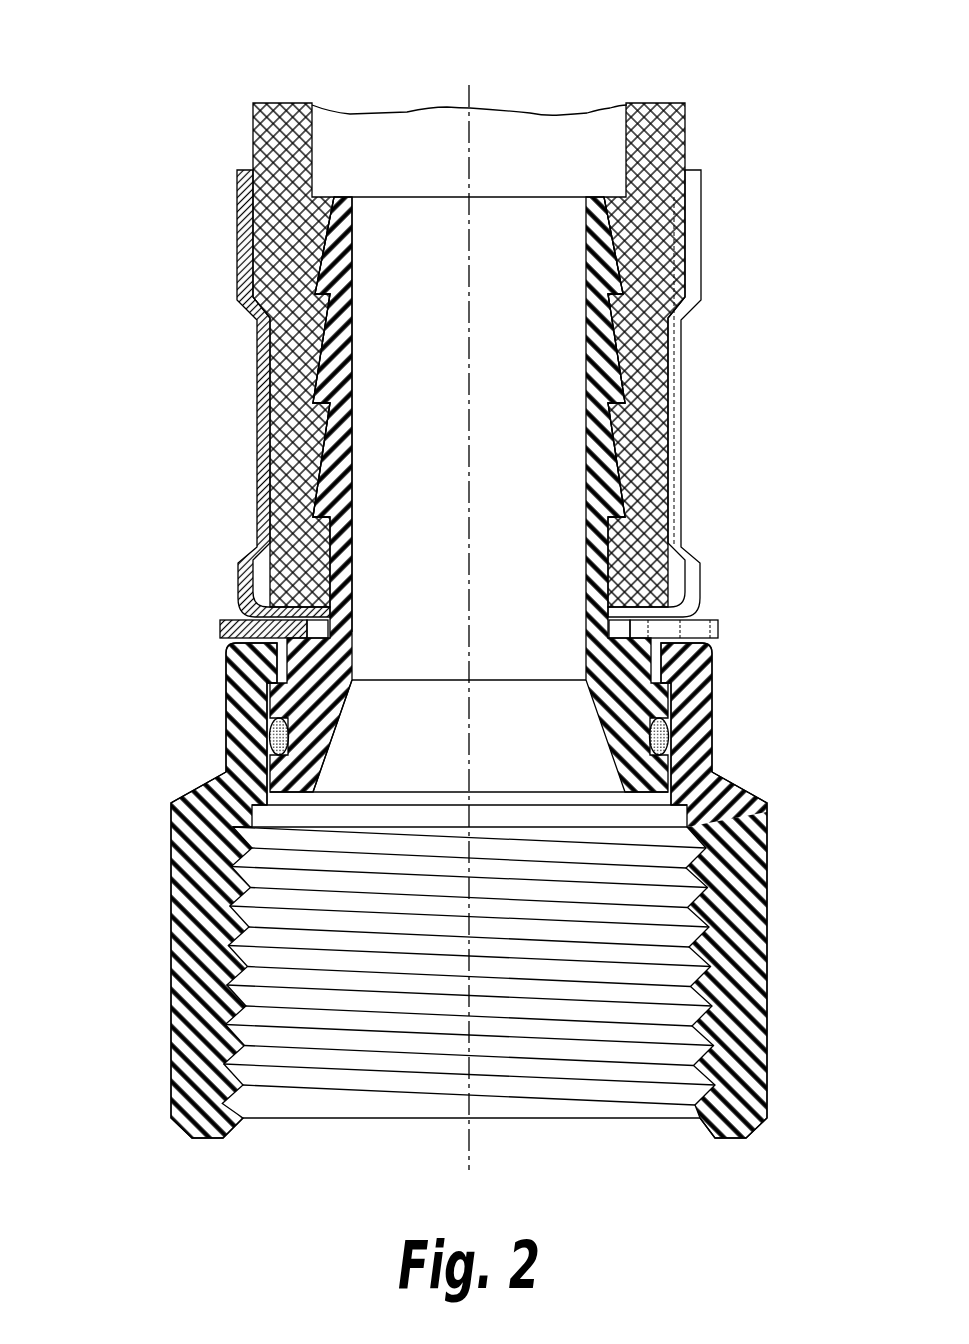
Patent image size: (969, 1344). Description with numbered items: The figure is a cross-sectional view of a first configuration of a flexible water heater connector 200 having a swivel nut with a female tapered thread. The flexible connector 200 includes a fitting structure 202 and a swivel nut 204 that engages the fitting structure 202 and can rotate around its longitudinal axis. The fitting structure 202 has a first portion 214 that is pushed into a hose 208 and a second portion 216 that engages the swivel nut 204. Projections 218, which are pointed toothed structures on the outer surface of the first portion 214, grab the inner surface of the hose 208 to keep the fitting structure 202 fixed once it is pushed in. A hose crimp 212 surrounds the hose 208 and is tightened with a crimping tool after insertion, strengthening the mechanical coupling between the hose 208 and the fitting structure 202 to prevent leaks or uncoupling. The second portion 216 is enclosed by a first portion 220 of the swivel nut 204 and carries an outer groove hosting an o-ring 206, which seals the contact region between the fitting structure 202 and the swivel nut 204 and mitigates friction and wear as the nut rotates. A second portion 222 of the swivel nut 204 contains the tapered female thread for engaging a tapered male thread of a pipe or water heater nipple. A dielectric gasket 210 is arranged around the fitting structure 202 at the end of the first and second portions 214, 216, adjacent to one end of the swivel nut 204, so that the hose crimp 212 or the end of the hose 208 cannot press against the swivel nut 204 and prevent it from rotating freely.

The flexible water heater connector 200 is at (233, 73).
The fitting structure 202 is at (537, 494).
The swivel nut 204 is at (463, 891).
The o-ring 206 is at (670, 737).
The hose 208 is at (293, 347).
The dielectric gasket 210 is at (220, 620).
The hose crimp 212 is at (257, 445).
The first portion 214 is at (572, 204).
The second portion 216 is at (573, 642).
The projections 218 is at (609, 291).
The first portion of the swivel nut 220 is at (152, 648).
The second portion of the swivel nut 222 is at (152, 800).